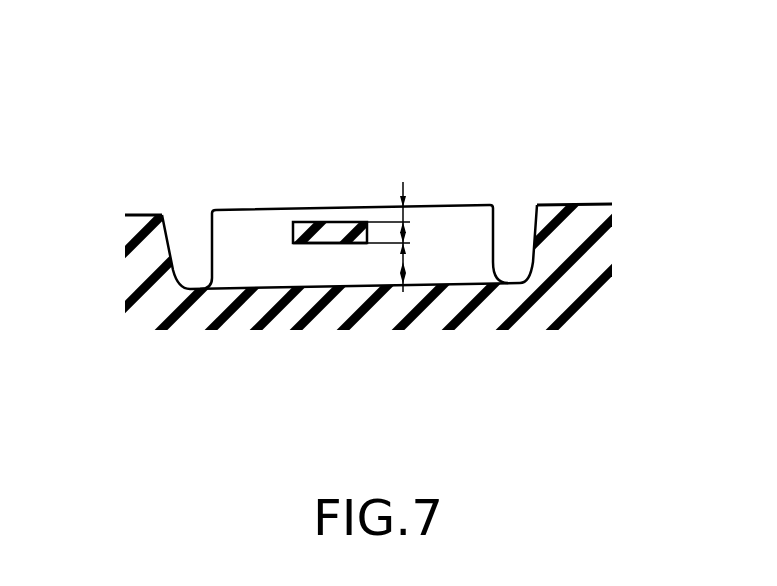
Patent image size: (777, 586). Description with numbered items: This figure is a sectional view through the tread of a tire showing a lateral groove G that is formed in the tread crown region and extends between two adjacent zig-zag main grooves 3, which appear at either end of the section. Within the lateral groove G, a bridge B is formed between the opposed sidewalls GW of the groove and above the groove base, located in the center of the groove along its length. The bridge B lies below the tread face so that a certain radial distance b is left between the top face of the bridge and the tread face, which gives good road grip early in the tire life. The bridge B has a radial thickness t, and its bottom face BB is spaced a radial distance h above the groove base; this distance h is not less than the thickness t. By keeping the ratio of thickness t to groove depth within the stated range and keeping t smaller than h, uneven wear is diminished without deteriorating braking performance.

The zig-zag main groove 3 is at (183, 238).
The lateral groove G is at (424, 230).
The sidewall of the lateral groove GW is at (240, 220).
The bridge B is at (327, 232).
The bottom face of the bridge BB is at (315, 245).
The distance between bridge top face and tread face b is at (403, 212).
The thickness of the bridge t is at (405, 237).
The radial distance of the bridge bottom face from the groove base h is at (403, 250).